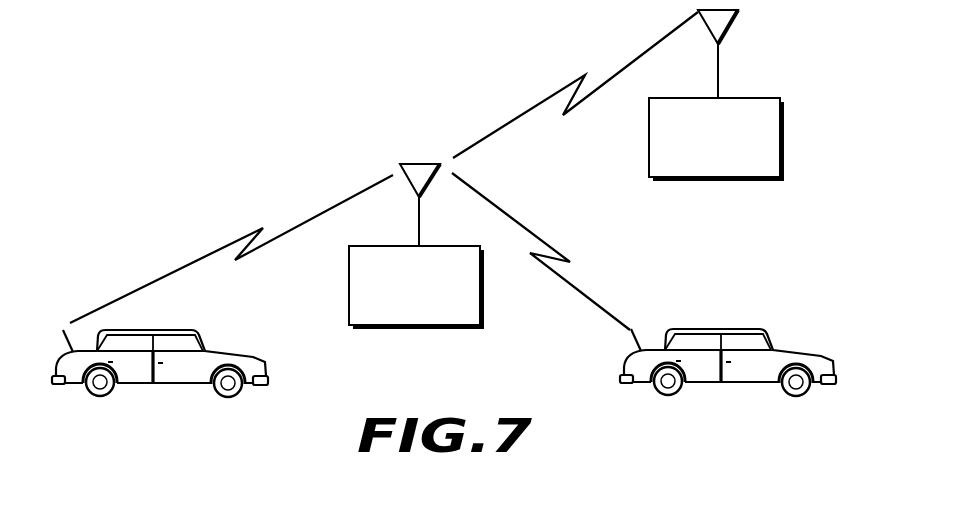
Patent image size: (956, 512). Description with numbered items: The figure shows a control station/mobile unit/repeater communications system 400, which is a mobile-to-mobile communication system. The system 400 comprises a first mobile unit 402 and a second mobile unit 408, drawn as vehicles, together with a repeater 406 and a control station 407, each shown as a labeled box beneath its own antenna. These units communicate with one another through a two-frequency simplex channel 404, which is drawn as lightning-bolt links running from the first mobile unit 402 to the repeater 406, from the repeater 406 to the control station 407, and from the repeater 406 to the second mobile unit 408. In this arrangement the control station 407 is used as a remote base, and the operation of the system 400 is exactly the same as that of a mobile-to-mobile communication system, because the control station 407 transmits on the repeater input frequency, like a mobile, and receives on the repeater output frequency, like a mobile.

The control station/mobile unit/repeater communications system 400 is at (137, 202).
The first mobile unit 402 is at (142, 388).
The two-frequency simplex channel 404 is at (292, 222).
The repeater 406 is at (425, 333).
The control station 407 is at (747, 182).
The second mobile unit 408 is at (718, 327).